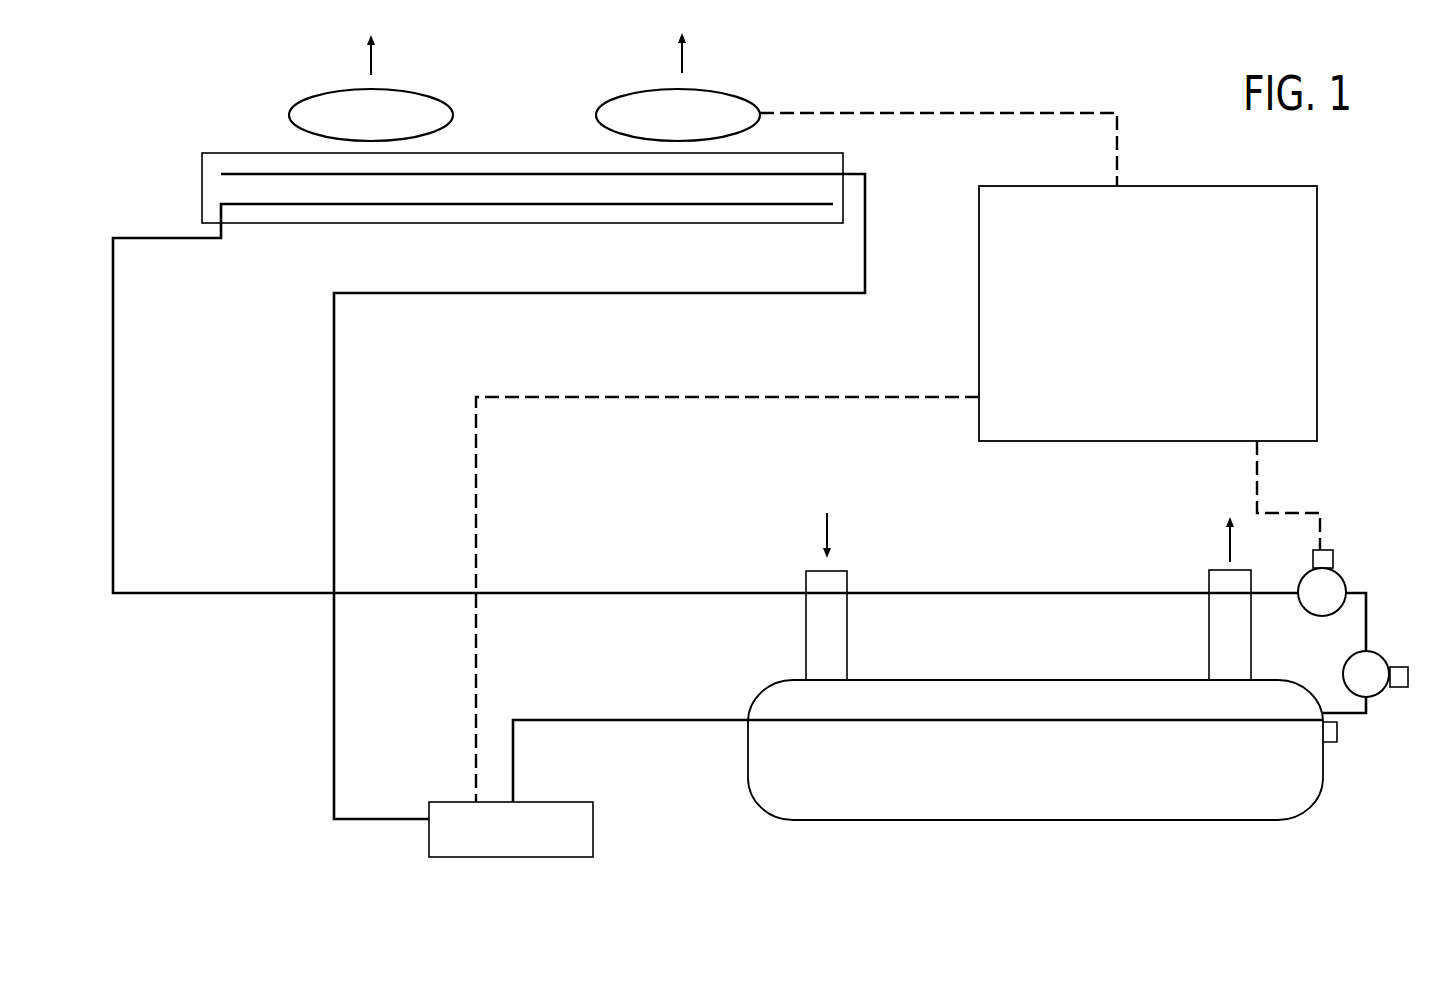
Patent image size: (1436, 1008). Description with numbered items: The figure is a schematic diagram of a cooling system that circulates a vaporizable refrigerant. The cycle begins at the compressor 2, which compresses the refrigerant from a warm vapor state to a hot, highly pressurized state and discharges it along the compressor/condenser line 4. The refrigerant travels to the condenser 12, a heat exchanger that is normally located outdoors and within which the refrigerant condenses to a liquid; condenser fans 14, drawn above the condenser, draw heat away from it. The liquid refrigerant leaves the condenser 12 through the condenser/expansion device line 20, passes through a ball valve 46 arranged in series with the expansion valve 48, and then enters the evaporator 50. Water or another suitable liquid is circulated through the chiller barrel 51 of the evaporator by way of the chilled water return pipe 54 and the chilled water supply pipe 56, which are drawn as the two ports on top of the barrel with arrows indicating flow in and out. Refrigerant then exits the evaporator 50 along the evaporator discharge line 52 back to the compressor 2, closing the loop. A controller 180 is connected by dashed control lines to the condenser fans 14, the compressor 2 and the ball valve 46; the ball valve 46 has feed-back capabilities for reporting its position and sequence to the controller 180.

The compressor 2 is at (502, 858).
The compressor/condenser line 4 is at (348, 822).
The condenser 12 is at (485, 152).
The condenser fans 14 is at (723, 92).
The condenser/expansion device line 20 is at (110, 258).
The ball valve 46 is at (1345, 578).
The expansion valve 48 is at (1385, 655).
The evaporator 50 is at (1127, 772).
The chiller barrel 51 is at (930, 822).
The suction line 52 is at (735, 720).
The chilled water return pipe 54 is at (837, 567).
The chilled water supply pipe 56 is at (1220, 568).
The controller 180 is at (1124, 363).